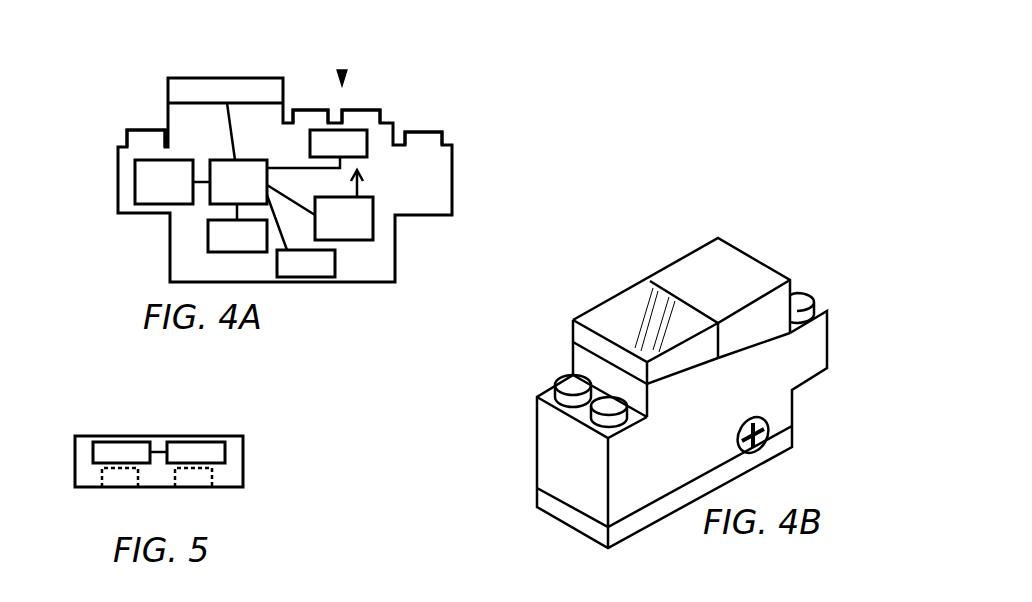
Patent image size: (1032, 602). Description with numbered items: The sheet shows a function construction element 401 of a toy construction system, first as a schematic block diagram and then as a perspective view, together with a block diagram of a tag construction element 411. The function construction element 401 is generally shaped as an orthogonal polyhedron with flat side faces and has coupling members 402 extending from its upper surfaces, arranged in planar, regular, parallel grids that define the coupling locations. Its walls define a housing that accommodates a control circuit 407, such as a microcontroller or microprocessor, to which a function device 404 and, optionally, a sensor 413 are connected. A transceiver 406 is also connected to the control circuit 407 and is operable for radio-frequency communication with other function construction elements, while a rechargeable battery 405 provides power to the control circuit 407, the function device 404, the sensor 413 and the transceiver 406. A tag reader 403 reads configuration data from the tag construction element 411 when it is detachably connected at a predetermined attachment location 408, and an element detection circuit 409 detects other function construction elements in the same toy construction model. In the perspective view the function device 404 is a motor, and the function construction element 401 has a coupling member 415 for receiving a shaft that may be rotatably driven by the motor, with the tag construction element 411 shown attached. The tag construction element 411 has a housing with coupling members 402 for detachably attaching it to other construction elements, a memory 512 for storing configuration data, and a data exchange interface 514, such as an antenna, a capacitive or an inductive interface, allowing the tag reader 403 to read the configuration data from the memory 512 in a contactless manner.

In FIG. 4A, the function construction element 401 is at (452, 162).
In FIG. 4B, the function construction element 401 is at (813, 347).
In FIG. 4A, the coupling members 402 is at (313, 110).
In FIG. 4B, the coupling members 402 is at (600, 410).
In FIG. 5, the coupling members 402 is at (118, 487).
In FIG. 4A, the tag reader 403 is at (370, 140).
In FIG. 4B, the tag reader 403 is at (617, 313).
In FIG. 4A, the function device 404 is at (118, 178).
In FIG. 4A, the rechargeable battery 405 is at (208, 238).
In FIG. 4A, the transceiver 406 is at (355, 243).
In FIG. 4A, the control circuit 407 is at (225, 160).
In FIG. 4A, the attachment location 408 is at (343, 70).
In FIG. 4A, the element detection circuit 409 is at (305, 277).
In FIG. 4B, the tag construction element 411 is at (687, 270).
In FIG. 5, the tag construction element 411 is at (243, 467).
In FIG. 4A, the sensor 413 is at (203, 77).
In FIG. 4B, the coupling member 415 is at (770, 438).
In FIG. 5, the memory 512 is at (110, 442).
In FIG. 5, the data exchange interface 514 is at (210, 442).